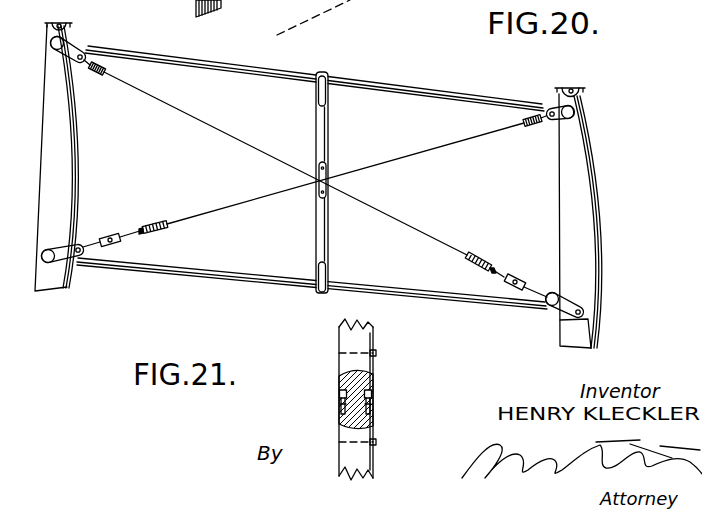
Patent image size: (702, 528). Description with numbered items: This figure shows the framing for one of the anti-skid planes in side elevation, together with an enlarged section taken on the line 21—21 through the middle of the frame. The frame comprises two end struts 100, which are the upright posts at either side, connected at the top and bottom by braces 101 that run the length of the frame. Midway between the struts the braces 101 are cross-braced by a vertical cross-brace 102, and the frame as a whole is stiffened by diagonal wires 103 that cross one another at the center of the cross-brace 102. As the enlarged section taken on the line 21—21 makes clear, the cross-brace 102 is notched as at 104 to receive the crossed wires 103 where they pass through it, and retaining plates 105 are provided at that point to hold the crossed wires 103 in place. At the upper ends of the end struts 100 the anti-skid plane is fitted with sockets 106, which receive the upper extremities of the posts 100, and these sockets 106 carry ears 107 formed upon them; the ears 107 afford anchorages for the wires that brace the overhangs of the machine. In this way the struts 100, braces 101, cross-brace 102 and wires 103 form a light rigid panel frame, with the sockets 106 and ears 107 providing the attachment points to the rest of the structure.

In FIG. 20, the section line 21 is at (325, 145).
In FIG. 20, the end strut 100 is at (70, 189).
In FIG. 20, the brace 101 is at (408, 87).
In FIG. 20, the cross-brace 102 is at (315, 123).
In FIG. 20, the wire 103 is at (437, 150).
In FIG. 21, the notch 104 is at (374, 393).
In FIG. 20, the retaining plate 105 is at (330, 182).
In FIG. 21, the retaining plate 105 is at (339, 372).
In FIG. 20, the socket 106 is at (576, 104).
In FIG. 20, the ear 107 is at (573, 88).